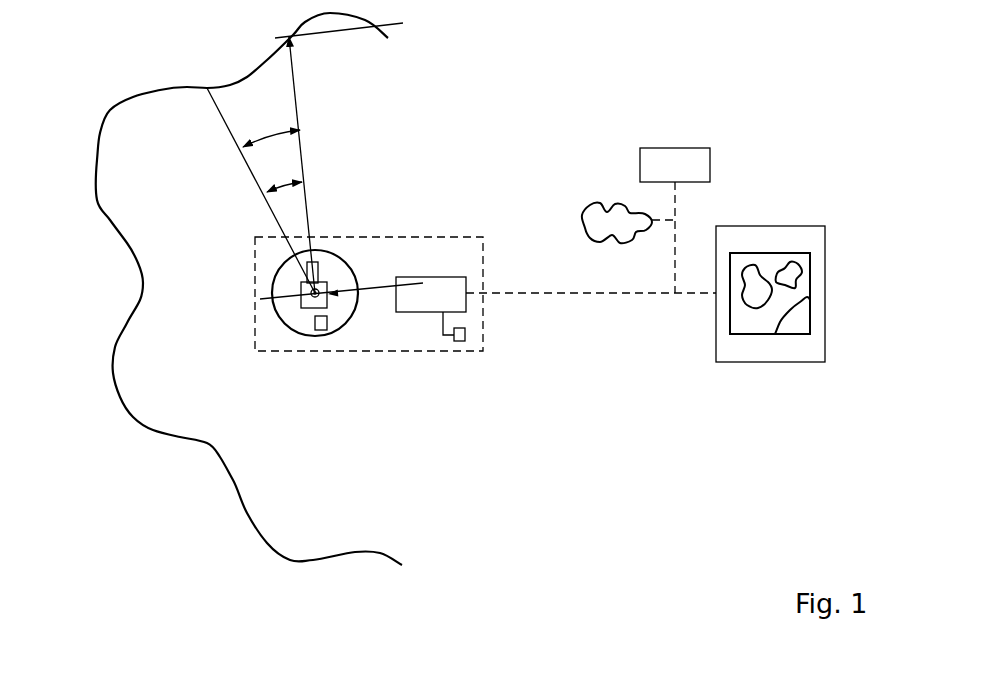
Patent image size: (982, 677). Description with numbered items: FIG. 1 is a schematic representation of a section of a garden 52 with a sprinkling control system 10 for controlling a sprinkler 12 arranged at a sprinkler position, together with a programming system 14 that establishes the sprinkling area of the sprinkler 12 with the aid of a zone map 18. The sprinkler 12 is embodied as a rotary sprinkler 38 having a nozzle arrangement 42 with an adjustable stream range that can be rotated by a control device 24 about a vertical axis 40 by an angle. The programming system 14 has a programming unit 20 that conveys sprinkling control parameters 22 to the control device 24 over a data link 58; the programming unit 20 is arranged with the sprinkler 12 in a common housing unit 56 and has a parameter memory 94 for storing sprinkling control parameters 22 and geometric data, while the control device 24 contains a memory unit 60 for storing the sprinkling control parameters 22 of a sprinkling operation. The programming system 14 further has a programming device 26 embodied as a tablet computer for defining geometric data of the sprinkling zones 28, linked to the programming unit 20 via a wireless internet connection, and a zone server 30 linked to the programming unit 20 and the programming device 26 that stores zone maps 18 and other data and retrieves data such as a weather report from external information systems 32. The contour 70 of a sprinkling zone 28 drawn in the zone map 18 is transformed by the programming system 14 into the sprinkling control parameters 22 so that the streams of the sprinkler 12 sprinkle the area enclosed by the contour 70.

The sprinkling control system 10 is at (733, 98).
The sprinkler 12 is at (285, 277).
The programming system 14 is at (553, 97).
The zone map 18 is at (812, 278).
The programming unit 20 is at (455, 277).
The sprinkling control parameters 22 is at (301, 129).
The control device 24 is at (330, 304).
The programming device 26 is at (770, 363).
The sprinkling zone 28 is at (145, 122).
The zone server 30 is at (711, 162).
The external information system 32 is at (610, 200).
The rotary sprinkler 38 is at (315, 293).
The vertical axis 40 is at (302, 302).
The nozzle arrangement 42 is at (318, 262).
The garden 52 is at (758, 42).
The common housing unit 56 is at (450, 352).
The data link 58 is at (382, 281).
The memory unit 60 is at (318, 332).
The contour 70 is at (137, 262).
The parameter memory 94 is at (466, 334).